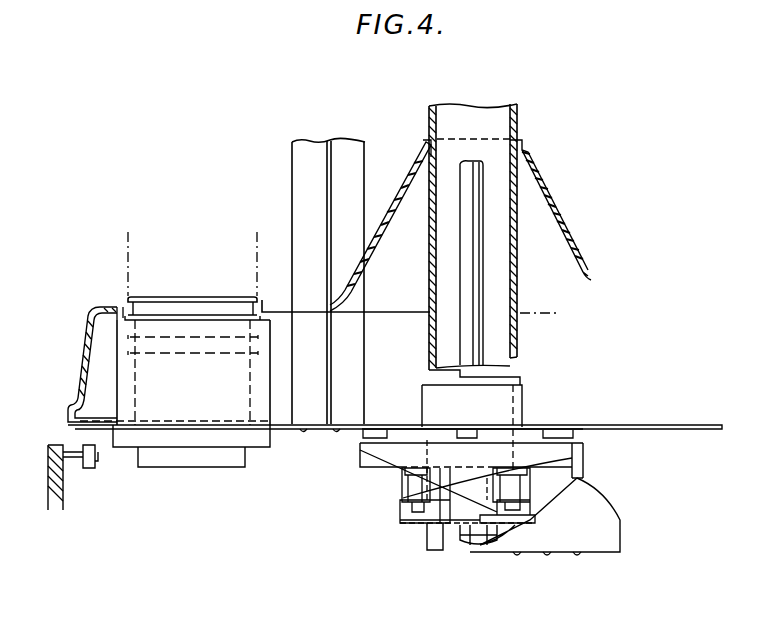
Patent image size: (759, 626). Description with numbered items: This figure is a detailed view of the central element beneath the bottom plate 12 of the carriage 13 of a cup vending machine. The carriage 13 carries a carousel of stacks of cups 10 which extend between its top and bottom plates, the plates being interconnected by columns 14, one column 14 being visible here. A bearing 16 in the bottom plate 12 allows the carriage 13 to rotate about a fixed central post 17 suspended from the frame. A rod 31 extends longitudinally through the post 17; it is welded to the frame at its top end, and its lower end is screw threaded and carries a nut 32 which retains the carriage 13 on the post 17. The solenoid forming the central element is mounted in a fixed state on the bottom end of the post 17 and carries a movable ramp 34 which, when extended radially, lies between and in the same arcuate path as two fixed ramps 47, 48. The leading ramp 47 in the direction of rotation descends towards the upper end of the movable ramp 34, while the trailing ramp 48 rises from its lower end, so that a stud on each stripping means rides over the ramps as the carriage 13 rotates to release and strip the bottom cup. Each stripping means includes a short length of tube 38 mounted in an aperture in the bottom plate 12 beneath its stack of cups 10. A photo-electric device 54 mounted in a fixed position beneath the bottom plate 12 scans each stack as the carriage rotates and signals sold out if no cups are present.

The stack of cups 10 is at (196, 288).
The bottom plate 12 is at (93, 417).
The carriage 13 is at (650, 416).
The column 14 is at (298, 158).
The bearing 16 is at (490, 398).
The central post 17 is at (518, 128).
The rod 31 is at (470, 192).
The nut 32 is at (459, 545).
The movable ramp 34 is at (497, 478).
The tube 38 is at (122, 328).
The leading fixed ramp 47 is at (403, 498).
The trailing fixed ramp 48 is at (566, 498).
The photo-electric device 54 is at (93, 468).